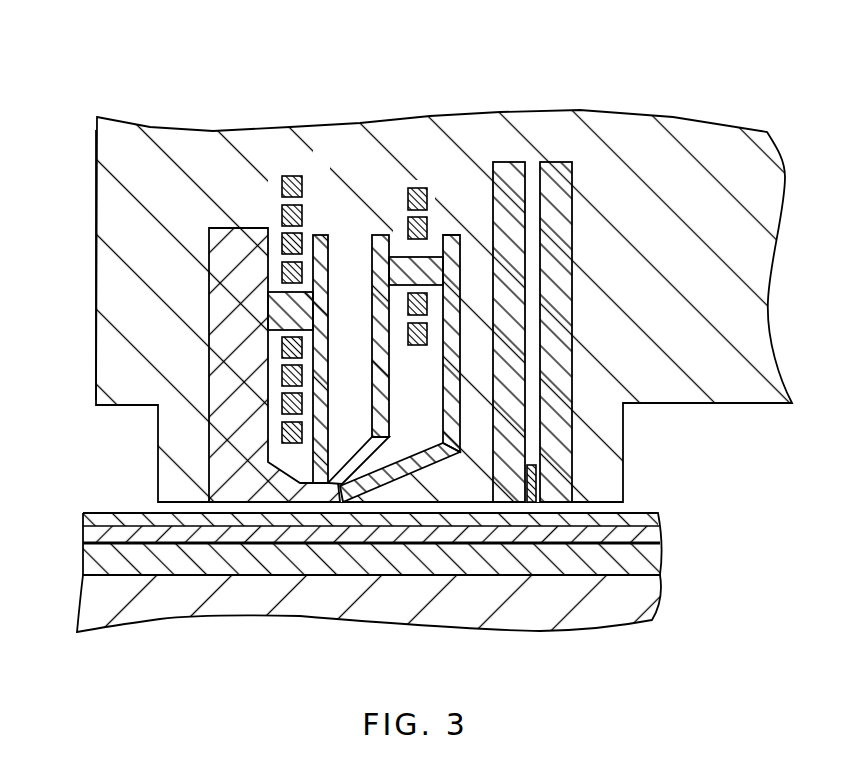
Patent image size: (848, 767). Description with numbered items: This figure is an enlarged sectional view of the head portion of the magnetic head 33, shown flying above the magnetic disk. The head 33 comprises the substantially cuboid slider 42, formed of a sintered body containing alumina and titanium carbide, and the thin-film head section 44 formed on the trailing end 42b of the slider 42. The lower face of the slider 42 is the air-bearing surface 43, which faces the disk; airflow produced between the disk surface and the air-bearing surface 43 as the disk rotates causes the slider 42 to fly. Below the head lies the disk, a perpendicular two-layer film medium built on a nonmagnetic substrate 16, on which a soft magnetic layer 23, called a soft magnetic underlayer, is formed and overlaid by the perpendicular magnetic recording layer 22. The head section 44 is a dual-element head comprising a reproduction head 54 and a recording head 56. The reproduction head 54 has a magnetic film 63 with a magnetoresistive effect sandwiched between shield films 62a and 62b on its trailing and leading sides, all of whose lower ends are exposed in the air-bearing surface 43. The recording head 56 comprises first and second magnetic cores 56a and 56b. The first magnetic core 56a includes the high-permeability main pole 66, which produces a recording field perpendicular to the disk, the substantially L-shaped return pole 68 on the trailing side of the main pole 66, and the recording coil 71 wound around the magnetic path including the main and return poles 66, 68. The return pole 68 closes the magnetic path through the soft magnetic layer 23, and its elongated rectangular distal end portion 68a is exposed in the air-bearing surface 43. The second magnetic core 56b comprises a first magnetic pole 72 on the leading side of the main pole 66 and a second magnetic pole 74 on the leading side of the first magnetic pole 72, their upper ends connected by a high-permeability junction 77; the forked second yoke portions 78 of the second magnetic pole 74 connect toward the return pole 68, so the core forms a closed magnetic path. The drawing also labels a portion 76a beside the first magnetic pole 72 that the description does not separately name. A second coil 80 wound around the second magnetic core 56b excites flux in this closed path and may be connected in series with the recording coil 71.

The magnetic head 33 is at (409, 341).
The slider 42 is at (710, 133).
The trailing end 42b is at (96, 195).
The air-bearing surface 43 is at (647, 406).
The head section 44 is at (322, 146).
The reproduction head 54 is at (581, 166).
The recording head 56 is at (361, 179).
The first magnetic core 56a is at (228, 211).
The second magnetic core 56b is at (448, 180).
The shield film 62a is at (510, 502).
The shield film 62b is at (560, 502).
The magnetic film 63 is at (530, 502).
The main pole 66 is at (330, 380).
The return pole 68 is at (209, 316).
The distal end portion 68a is at (275, 483).
The recording coil 71 is at (290, 172).
The first magnetic pole 72 is at (110, 296).
The second magnetic pole 74 is at (455, 380).
The bent portion 76a is at (362, 490).
The junction 77 is at (393, 255).
The second yoke portions 78 is at (412, 470).
The second coil 80 is at (418, 185).
The perpendicular magnetic recording layer 22 is at (652, 533).
The soft magnetic layer 23 is at (652, 563).
The substrate 16 is at (650, 598).